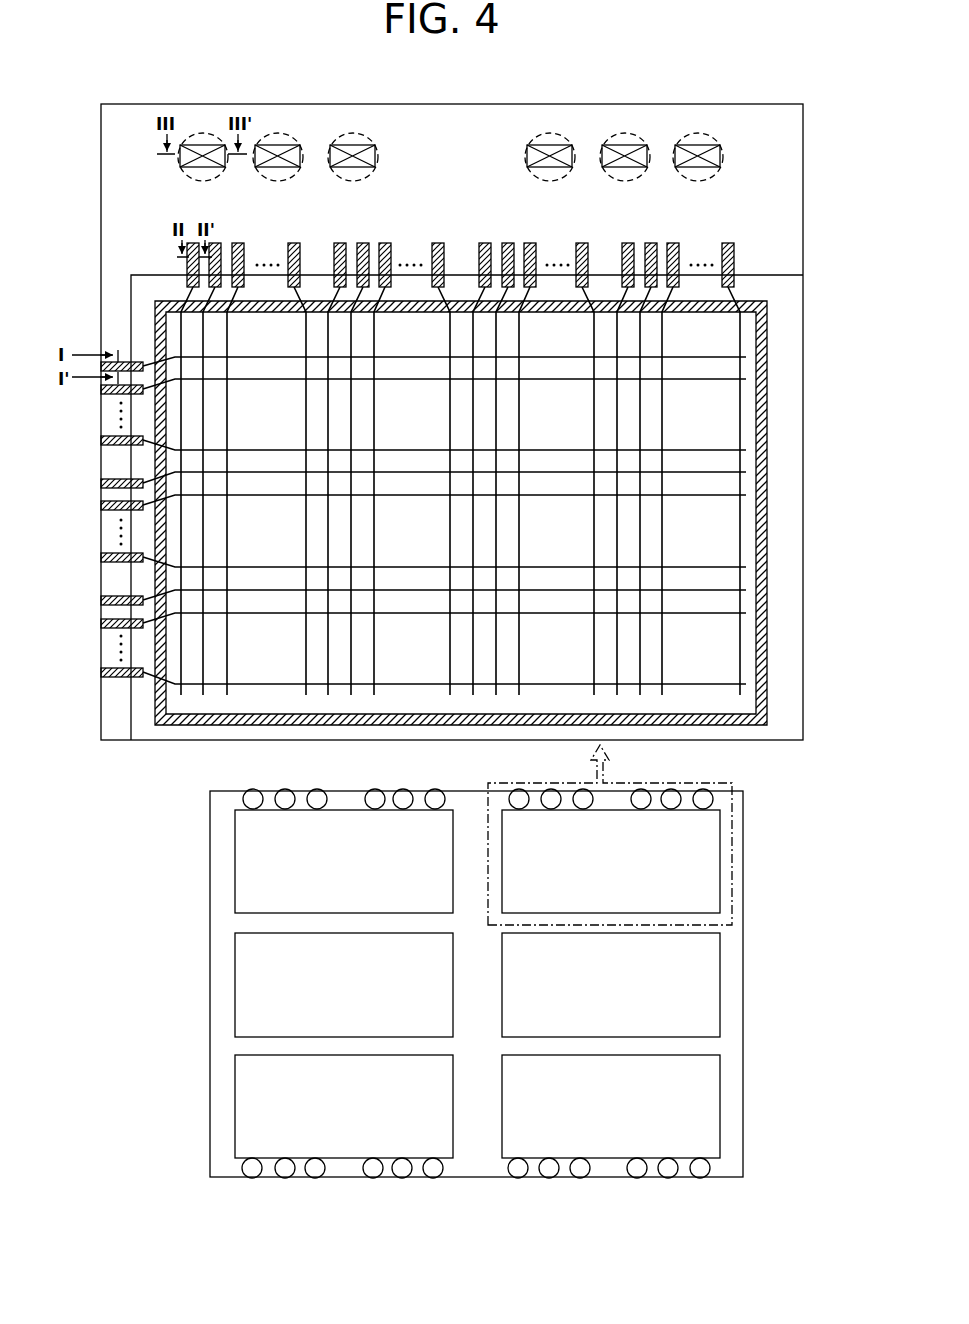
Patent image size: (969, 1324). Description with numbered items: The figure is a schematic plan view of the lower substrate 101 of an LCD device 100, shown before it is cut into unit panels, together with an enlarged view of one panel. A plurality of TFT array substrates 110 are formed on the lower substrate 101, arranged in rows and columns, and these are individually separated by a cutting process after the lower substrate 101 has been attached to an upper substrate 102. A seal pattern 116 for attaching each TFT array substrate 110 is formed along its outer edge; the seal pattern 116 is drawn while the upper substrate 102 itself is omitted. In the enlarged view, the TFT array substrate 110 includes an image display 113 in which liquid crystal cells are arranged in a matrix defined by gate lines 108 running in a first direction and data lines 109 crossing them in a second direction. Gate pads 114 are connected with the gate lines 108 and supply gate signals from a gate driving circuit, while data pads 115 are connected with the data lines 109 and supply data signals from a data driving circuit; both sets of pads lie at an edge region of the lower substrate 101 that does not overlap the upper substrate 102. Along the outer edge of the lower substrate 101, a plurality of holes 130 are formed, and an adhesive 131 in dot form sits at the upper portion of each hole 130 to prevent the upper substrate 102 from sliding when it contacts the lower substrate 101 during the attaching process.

The LCD device 100 is at (190, 838).
The lower substrate 101 is at (803, 193).
The upper substrate 102 is at (777, 283).
The gate lines 108 is at (693, 567).
The data lines 109 is at (662, 646).
The TFT array substrate 110 is at (99, 122).
The image display 113 is at (460, 507).
The gate pads 114 is at (90, 680).
The data pads 115 is at (741, 243).
The seal pattern 116 is at (767, 404).
The holes 130 is at (698, 152).
The adhesive 131 is at (722, 157).